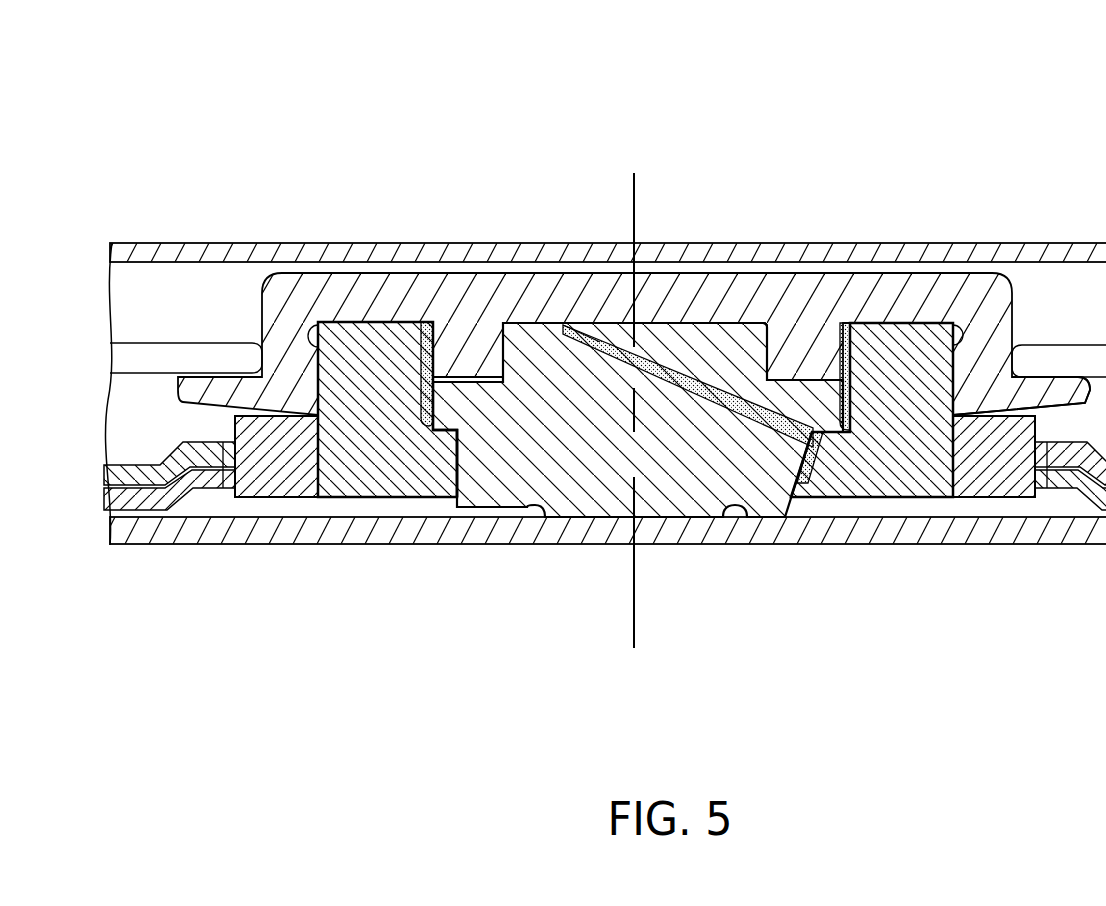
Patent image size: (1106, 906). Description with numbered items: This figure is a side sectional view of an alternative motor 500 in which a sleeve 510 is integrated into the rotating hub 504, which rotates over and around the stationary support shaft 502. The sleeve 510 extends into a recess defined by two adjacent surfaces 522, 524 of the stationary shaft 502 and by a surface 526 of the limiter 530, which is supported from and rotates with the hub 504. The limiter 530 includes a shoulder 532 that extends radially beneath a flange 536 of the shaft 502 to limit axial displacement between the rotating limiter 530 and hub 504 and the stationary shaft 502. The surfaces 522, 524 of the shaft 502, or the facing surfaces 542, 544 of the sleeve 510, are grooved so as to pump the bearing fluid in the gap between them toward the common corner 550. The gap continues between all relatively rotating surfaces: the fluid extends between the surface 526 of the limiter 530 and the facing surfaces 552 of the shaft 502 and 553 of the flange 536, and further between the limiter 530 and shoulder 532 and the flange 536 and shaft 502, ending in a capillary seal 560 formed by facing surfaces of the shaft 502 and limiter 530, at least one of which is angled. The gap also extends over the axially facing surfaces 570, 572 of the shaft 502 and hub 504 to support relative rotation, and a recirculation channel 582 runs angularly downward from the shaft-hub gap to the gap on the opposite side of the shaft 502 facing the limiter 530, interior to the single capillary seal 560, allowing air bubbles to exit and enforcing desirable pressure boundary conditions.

The motor 500 is at (665, 103).
The stationary support shaft 502 is at (612, 528).
The rotating hub 504 is at (347, 302).
The sleeve 510 is at (491, 348).
The surface of the stationary shaft 522 is at (498, 358).
The surface of the stationary shaft 524 is at (520, 368).
The surface of the limiter 526 is at (445, 350).
The limiter 530 is at (345, 482).
The shoulder 532 is at (852, 460).
The flange 536 is at (440, 413).
The facing surface of the sleeve 542 is at (440, 370).
The facing surface of the sleeve 544 is at (530, 322).
The common corner 550 is at (746, 345).
The facing surface of the shaft 552 is at (458, 345).
The facing surface of the flange 553 is at (458, 430).
The capillary seal 560 is at (800, 485).
The axially facing surface of the shaft 570 is at (873, 300).
The axially facing surface of the hub 572 is at (773, 360).
The recirculation channel 582 is at (776, 424).